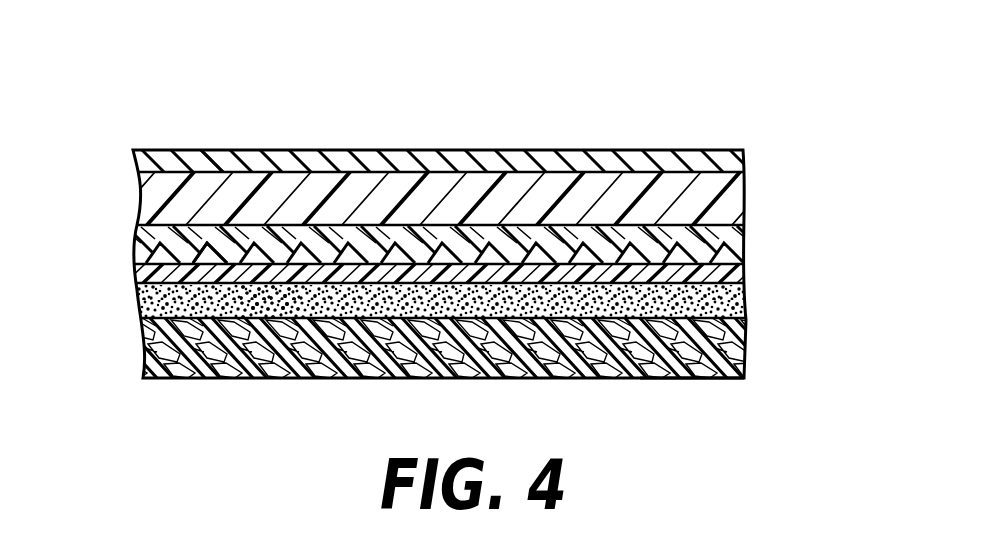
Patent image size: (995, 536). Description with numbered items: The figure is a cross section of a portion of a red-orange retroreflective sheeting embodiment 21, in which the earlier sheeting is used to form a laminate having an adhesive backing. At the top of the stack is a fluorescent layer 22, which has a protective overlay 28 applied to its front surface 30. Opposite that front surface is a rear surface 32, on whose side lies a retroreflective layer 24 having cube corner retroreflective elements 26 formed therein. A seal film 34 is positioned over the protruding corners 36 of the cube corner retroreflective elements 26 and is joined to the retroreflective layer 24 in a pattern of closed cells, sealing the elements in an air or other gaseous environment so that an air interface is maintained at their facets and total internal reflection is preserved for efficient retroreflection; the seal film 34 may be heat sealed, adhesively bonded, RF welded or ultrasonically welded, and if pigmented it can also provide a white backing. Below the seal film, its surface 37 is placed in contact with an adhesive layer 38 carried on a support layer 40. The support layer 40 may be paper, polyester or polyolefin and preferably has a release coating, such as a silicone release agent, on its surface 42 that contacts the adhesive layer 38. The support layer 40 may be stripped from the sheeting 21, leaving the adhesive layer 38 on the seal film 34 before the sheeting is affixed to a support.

The retroreflective sheeting embodiment 21 is at (776, 133).
The fluorescent layer 22 is at (706, 200).
The retroreflective layer 24 is at (727, 240).
The cube corner retroreflective elements 26 is at (178, 252).
The protective overlay 28 is at (158, 160).
The front surface 30 is at (218, 153).
The rear surface 32 is at (152, 240).
The seal film 34 is at (657, 276).
The protruding corners 36 is at (172, 283).
The surface of seal film 37 is at (268, 283).
The adhesive layer 38 is at (710, 302).
The support layer 40 is at (710, 353).
The surface of support layer 42 is at (682, 320).